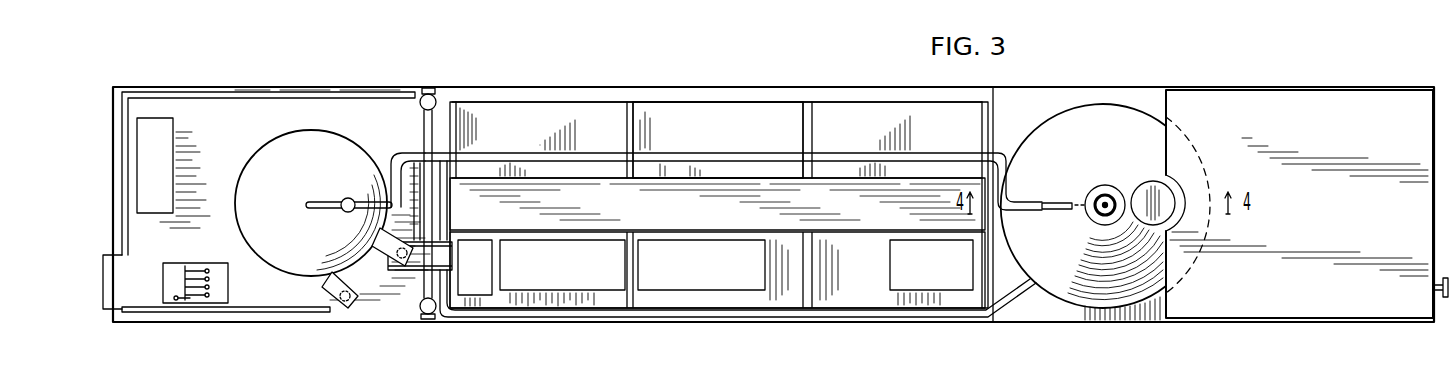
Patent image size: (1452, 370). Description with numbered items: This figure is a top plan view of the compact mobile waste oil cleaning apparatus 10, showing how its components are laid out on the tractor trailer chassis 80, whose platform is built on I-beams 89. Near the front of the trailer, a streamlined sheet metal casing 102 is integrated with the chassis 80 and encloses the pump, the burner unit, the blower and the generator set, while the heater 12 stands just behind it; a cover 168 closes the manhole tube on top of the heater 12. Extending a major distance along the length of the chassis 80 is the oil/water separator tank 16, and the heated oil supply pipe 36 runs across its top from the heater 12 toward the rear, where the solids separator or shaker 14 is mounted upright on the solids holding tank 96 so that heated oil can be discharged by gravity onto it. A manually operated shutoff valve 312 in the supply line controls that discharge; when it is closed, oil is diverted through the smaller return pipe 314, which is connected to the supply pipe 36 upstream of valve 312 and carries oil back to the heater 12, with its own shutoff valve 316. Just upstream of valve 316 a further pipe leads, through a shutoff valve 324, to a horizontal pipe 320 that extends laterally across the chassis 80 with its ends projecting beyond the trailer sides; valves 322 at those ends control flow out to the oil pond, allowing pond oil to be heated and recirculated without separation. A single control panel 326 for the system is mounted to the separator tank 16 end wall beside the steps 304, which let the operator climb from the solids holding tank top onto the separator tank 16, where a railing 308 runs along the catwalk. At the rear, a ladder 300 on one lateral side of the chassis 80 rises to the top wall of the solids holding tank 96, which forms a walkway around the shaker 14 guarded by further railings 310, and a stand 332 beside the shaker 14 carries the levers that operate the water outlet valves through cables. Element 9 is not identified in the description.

The vehicle chassis 9 is at (355, 322).
The waste oil cleaning apparatus 10 is at (705, 86).
The heater 12 is at (1135, 104).
The solids separator 14 is at (330, 85).
The oil/water separator tank 16 is at (777, 86).
The heated oil supply pipe 36 is at (728, 156).
The tractor trailer chassis 80 is at (718, 322).
The I-beams 89 is at (432, 92).
The solids holding tank 96 is at (240, 123).
The sheet metal casing 102 is at (1336, 108).
The cover 168 is at (1143, 190).
The ladder 300 is at (103, 311).
The steps 304 is at (443, 222).
The railing 308 is at (583, 232).
The railings 310 is at (270, 313).
The shutoff valve 312 is at (347, 213).
The oil return pipe 314 is at (448, 185).
The shutoff valve 316 is at (455, 148).
The horizontal pipe 320 is at (423, 120).
The valves 322 is at (422, 93).
The shutoff valve 324 is at (378, 152).
The control panel 326 is at (170, 160).
The stand 332 is at (207, 305).